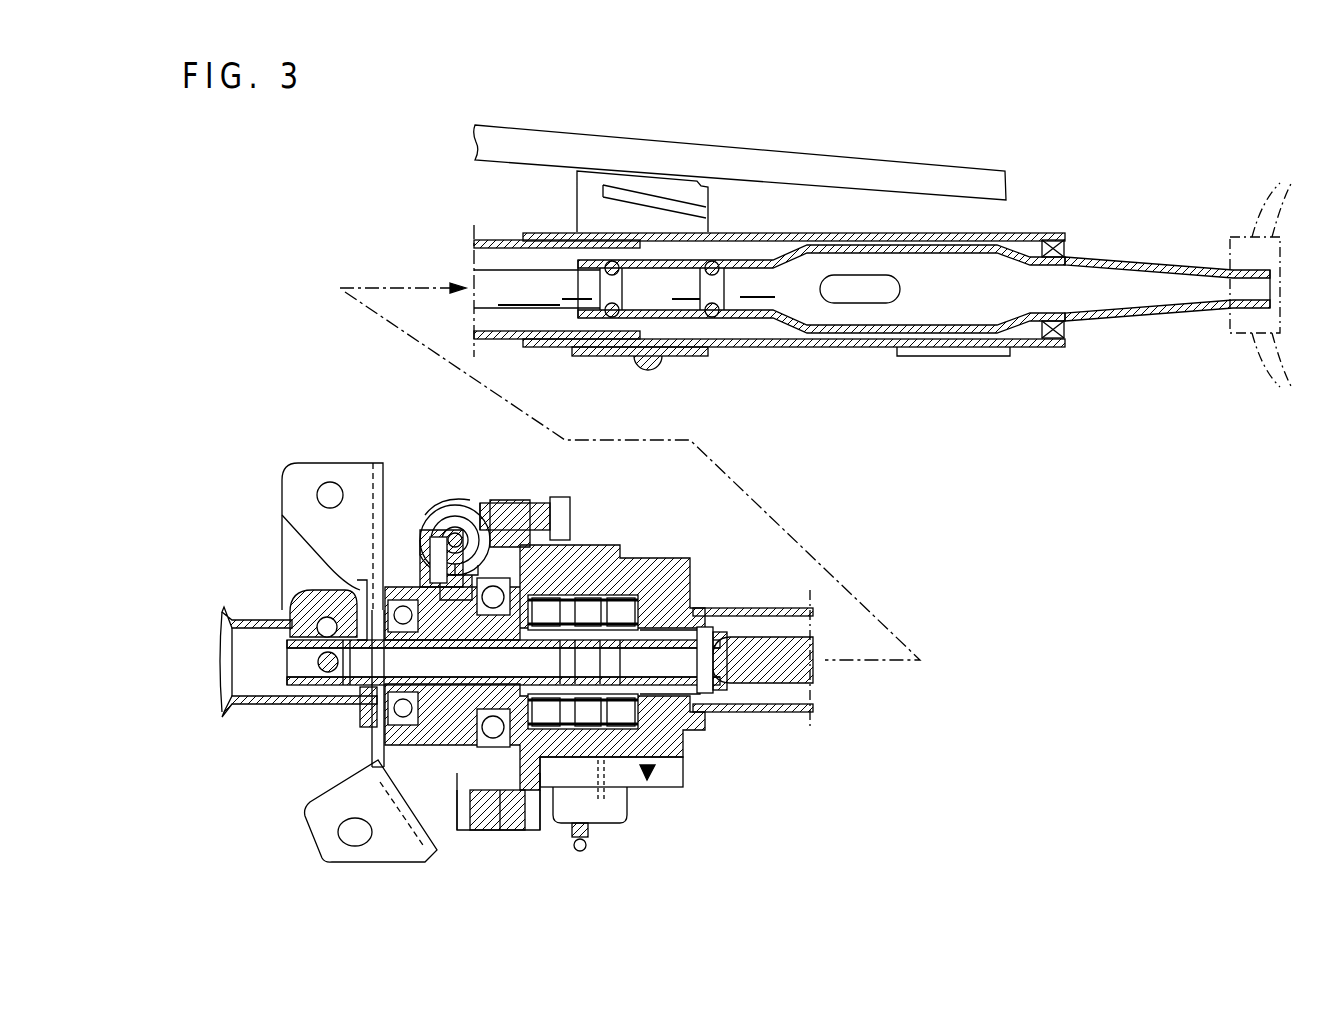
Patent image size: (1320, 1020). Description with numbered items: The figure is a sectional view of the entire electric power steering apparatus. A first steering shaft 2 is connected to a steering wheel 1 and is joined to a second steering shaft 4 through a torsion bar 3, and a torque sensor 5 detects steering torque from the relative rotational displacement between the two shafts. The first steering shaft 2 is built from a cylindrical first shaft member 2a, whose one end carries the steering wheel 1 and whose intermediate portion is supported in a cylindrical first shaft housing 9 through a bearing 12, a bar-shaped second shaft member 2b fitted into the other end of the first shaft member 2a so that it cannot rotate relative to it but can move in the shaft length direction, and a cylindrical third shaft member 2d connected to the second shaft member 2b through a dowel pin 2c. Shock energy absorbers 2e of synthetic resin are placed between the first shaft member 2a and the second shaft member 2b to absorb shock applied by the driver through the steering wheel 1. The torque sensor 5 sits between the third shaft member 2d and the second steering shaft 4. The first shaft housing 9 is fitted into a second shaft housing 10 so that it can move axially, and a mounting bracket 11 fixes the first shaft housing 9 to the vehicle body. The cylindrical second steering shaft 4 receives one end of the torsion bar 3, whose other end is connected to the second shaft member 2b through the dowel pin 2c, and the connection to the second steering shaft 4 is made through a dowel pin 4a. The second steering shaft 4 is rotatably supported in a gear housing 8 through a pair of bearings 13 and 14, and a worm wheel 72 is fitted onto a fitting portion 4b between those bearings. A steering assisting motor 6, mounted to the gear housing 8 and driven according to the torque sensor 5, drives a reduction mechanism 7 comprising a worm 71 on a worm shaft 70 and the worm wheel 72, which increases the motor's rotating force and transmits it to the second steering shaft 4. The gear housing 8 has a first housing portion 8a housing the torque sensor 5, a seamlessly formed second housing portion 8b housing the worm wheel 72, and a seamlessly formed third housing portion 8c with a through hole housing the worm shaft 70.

The steering wheel 1 is at (1268, 388).
The first steering shaft 2 is at (1146, 310).
The first shaft member 2a is at (1096, 258).
The second shaft member 2b is at (501, 270).
The dowel pin 2c is at (705, 630).
The third shaft member 2d is at (592, 662).
The shock energy absorbers 2e is at (614, 320).
The torsion bar 3 is at (668, 656).
The second steering shaft 4 is at (346, 716).
The dowel pin 4a is at (292, 706).
The fitting portion 4b is at (445, 598).
The torque sensor 5 is at (576, 830).
The steering assisting motor 6 is at (398, 468).
The reduction mechanism 7 is at (436, 530).
The gear housing 8 is at (404, 516).
The first housing portion 8a is at (578, 580).
The second housing portion 8b is at (466, 822).
The third housing portion 8c is at (400, 547).
The first shaft housing 9 is at (1016, 348).
The second shaft housing 10 is at (790, 714).
The mounting bracket 11 is at (577, 188).
The bearing 12 is at (1050, 233).
The bearing 13 is at (498, 822).
The bearing 14 is at (378, 765).
The worm shaft 70 is at (452, 533).
The worm 71 is at (470, 530).
The worm wheel 72 is at (435, 590).